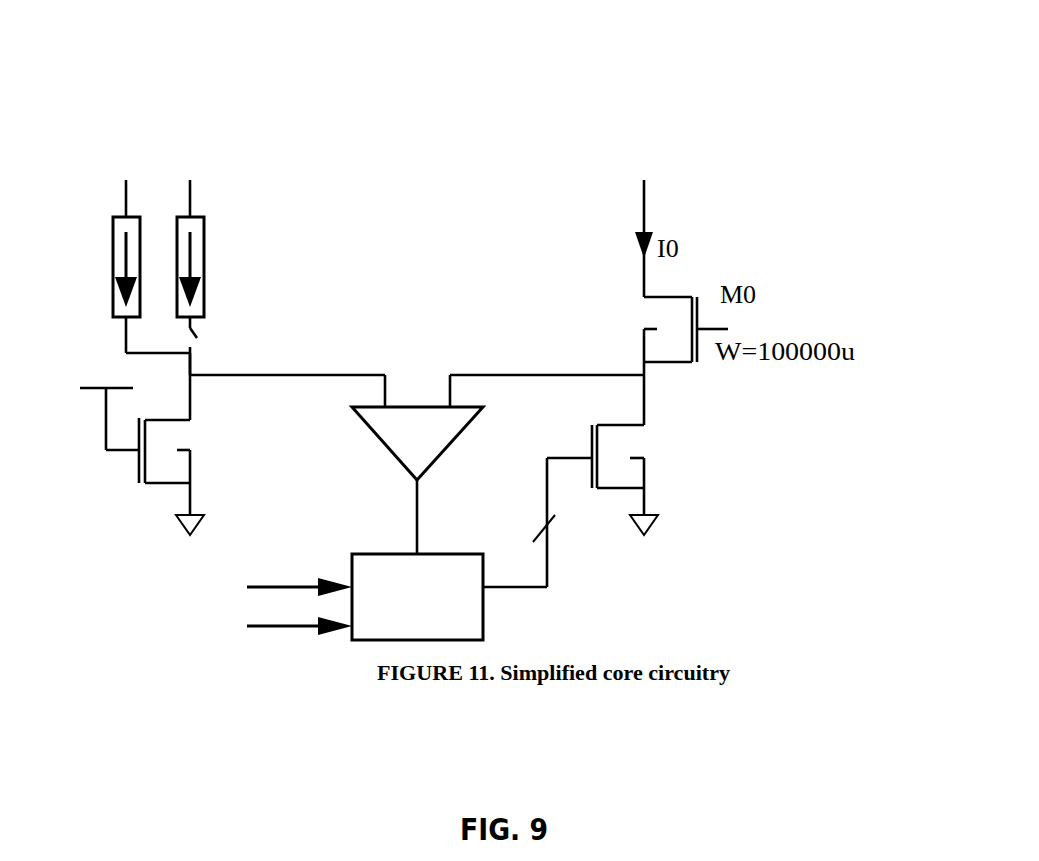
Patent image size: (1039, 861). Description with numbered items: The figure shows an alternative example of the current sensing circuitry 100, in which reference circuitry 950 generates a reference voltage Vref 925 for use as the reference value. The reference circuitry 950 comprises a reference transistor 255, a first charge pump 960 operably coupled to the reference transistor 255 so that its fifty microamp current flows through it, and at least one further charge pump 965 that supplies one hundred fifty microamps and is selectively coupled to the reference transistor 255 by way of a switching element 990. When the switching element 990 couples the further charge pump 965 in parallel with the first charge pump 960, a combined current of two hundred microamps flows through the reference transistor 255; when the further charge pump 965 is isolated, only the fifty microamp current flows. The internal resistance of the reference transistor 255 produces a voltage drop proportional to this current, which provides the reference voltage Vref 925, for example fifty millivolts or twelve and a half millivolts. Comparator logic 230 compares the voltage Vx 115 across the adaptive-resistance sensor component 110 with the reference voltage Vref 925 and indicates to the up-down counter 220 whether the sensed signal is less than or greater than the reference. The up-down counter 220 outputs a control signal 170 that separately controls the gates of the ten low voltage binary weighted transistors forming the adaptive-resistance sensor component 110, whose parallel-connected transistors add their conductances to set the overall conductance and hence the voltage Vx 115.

The reference circuitry 950 is at (70, 102).
The current sensing circuitry 100 is at (600, 85).
The first charge pump 960 is at (107, 243).
The further charge pump 965 is at (203, 242).
The switching element 990 is at (198, 340).
The reference voltage (Vref) 925 is at (337, 373).
The voltage Vx 115 is at (580, 372).
The comparator logic 230 is at (377, 443).
The reference transistor 255 is at (139, 470).
The adaptive-resistance sensor component 110 is at (643, 477).
The control signal 170 is at (520, 580).
The up-down counter 220 is at (368, 638).